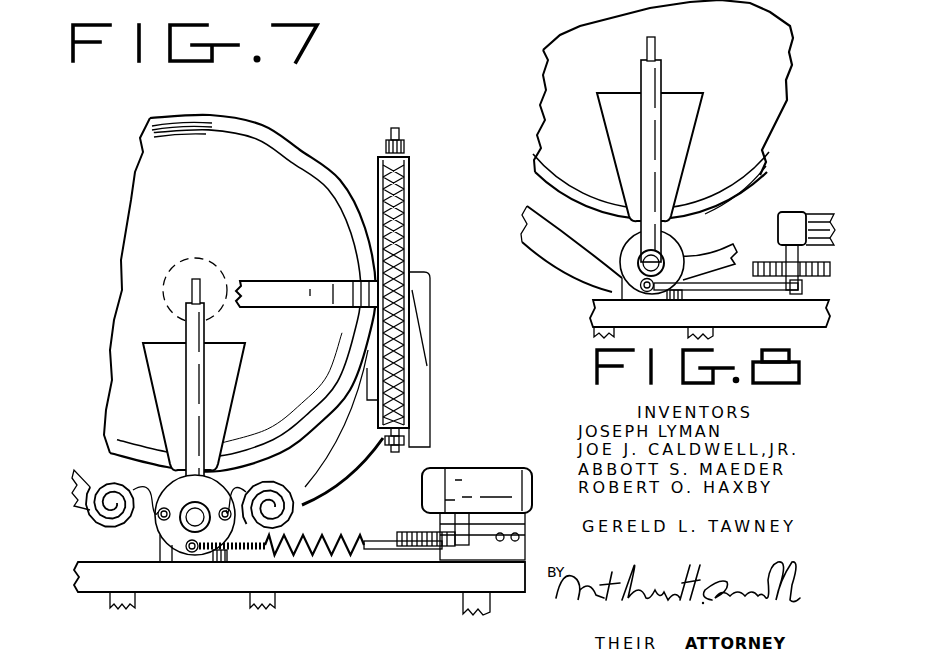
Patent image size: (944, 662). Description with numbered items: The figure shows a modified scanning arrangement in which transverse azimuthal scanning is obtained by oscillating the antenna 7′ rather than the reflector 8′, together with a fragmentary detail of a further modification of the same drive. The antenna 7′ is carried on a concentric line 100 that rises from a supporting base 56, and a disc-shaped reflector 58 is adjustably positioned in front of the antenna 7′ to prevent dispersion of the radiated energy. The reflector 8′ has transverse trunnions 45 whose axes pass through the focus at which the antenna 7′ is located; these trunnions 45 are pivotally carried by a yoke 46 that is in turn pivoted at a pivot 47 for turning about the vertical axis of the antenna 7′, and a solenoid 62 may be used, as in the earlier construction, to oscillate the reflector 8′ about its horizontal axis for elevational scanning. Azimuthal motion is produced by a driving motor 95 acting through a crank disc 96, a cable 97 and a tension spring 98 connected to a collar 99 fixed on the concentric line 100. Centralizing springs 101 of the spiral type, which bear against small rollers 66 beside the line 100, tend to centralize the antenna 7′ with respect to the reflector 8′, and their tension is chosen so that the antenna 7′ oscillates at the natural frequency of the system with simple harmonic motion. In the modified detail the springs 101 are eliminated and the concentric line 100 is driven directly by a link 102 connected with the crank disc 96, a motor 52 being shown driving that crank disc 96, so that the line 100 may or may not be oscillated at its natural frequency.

In FIG. 7, the reflector 8′ is at (297, 161).
In FIG. 8, the reflector 8′ is at (553, 90).
In FIG. 7, the antenna 7′ is at (202, 287).
In FIG. 8, the antenna 7′ is at (657, 50).
In FIG. 7, the disc-shaped reflector 58 is at (203, 259).
In FIG. 7, the trunnions 45 is at (410, 291).
In FIG. 7, the solenoid 62 is at (422, 400).
In FIG. 7, the concentric line 100 is at (206, 394).
In FIG. 8, the concentric line 100 is at (662, 160).
In FIG. 7, the centralizing springs 101 is at (96, 521).
In FIG. 7, the roller 66 is at (218, 510).
In FIG. 7, the yoke 46 is at (314, 498).
In FIG. 8, the yoke 46 is at (629, 249).
In FIG. 7, the tension spring 98 is at (313, 540).
In FIG. 7, the crank disc 96 is at (425, 533).
In FIG. 8, the crank disc 96 is at (820, 277).
In FIG. 7, the driving motor 95 is at (506, 472).
In FIG. 7, the pivot 47 is at (178, 546).
In FIG. 8, the pivot 47 is at (620, 288).
In FIG. 7, the collar 99 is at (172, 550).
In FIG. 8, the collar 99 is at (647, 285).
In FIG. 7, the cable 97 is at (246, 556).
In FIG. 7, the supporting base 56 is at (365, 588).
In FIG. 8, the supporting base 56 is at (729, 318).
In FIG. 8, the motor 52 is at (790, 214).
In FIG. 8, the link 102 is at (700, 284).